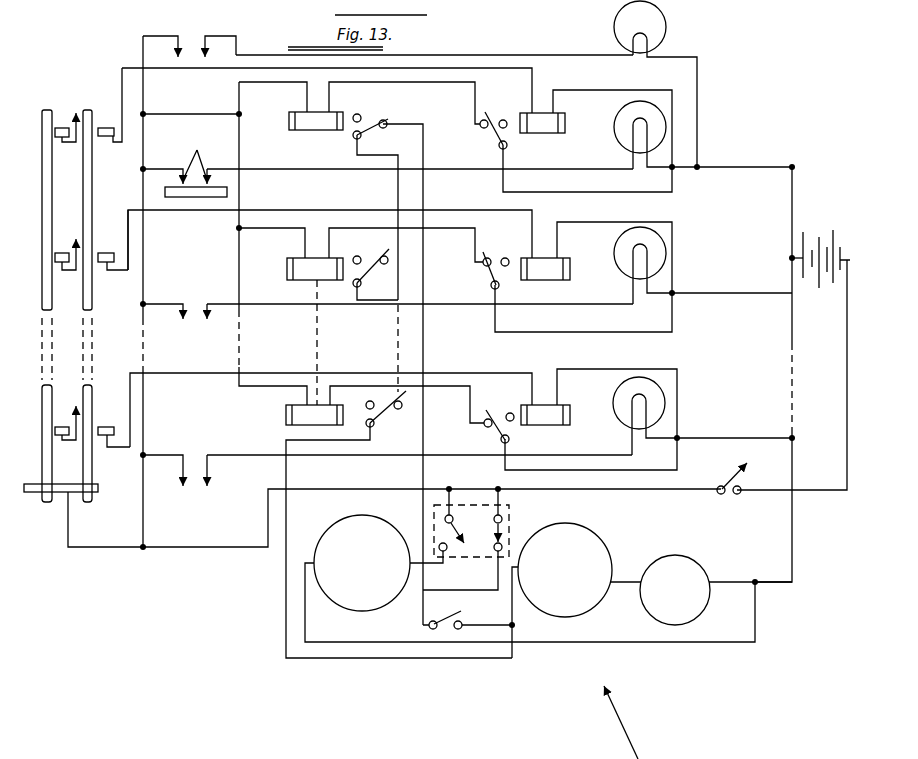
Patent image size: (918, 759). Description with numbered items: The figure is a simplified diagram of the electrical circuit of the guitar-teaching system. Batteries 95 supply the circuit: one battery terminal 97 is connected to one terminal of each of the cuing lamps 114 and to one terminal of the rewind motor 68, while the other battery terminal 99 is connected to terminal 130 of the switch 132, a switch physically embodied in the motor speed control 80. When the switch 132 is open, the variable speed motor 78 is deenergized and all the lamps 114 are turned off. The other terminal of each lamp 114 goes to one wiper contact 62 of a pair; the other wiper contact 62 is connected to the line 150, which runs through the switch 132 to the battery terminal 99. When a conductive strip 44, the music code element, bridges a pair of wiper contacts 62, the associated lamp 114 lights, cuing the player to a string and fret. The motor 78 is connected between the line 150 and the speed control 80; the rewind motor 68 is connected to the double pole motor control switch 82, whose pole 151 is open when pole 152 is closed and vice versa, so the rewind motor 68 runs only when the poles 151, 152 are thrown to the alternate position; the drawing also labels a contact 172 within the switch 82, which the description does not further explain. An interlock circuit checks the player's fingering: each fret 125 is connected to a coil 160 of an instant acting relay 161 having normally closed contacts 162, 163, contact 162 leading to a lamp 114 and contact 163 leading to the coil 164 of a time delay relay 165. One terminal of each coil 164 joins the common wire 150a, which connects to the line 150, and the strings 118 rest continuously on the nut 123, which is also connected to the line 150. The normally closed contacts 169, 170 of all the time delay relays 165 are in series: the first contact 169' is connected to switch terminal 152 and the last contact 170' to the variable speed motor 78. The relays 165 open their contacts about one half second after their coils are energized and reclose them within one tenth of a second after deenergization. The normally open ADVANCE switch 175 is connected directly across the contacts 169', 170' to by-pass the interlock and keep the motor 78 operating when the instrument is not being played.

The strings 118 is at (90, 195).
The nut 123 is at (33, 492).
The frets 125 is at (105, 128).
The wiper contacts 62 is at (195, 157).
The conductive strip 44 is at (227, 191).
The common wire 150a is at (240, 145).
The line 150 is at (147, 247).
The time delay relay 165 is at (315, 250).
The first contact 169' is at (399, 118).
The coil 164 is at (333, 254).
The normally closed contact 169 is at (404, 267).
The normally closed contact 170 is at (382, 275).
The last contact 170' is at (390, 419).
The normally closed contact 163 is at (485, 257).
The normally closed contact 162 is at (502, 240).
The coil 160 is at (547, 133).
The instant acting relay 161 is at (541, 252).
The lamps 114 is at (617, 140).
The batteries 95 is at (824, 233).
The battery terminal 97 is at (801, 236).
The battery terminal 99 is at (845, 265).
The rewind motor 68 is at (349, 515).
The variable speed motor 78 is at (596, 531).
The motor speed control 80 is at (703, 541).
The motor control switch 82 is at (433, 508).
The switch pole 151 is at (442, 531).
The switch pole 152 is at (500, 532).
The relay contact 172 is at (494, 549).
The ADVANCE switch 175 is at (450, 630).
The switch terminal 130 is at (740, 494).
The switch 132 is at (725, 495).